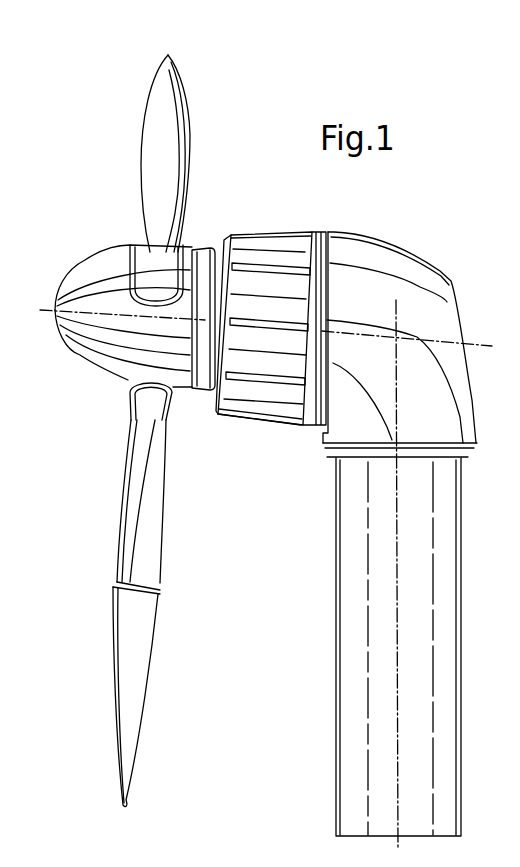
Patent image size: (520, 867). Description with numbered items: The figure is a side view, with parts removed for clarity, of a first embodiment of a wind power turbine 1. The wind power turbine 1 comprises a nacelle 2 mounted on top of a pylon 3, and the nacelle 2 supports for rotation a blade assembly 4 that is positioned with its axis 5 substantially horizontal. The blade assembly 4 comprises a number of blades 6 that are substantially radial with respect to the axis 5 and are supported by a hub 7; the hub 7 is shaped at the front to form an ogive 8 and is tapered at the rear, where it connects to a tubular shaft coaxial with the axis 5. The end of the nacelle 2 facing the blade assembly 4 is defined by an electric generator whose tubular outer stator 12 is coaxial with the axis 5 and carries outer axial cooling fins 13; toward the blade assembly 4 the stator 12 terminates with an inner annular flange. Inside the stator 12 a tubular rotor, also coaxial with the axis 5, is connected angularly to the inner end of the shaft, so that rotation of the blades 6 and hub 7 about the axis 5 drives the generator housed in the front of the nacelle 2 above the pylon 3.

The wind power turbine 1 is at (405, 235).
The nacelle 2 is at (417, 277).
The pylon 3 is at (353, 528).
The blade assembly 4 is at (102, 240).
The axis 5 is at (458, 343).
The blades 6 is at (160, 148).
The hub 7 is at (190, 257).
The ogive 8 is at (87, 335).
The tubular outer stator 12 is at (265, 250).
The outer axial cooling fins 13 is at (289, 232).